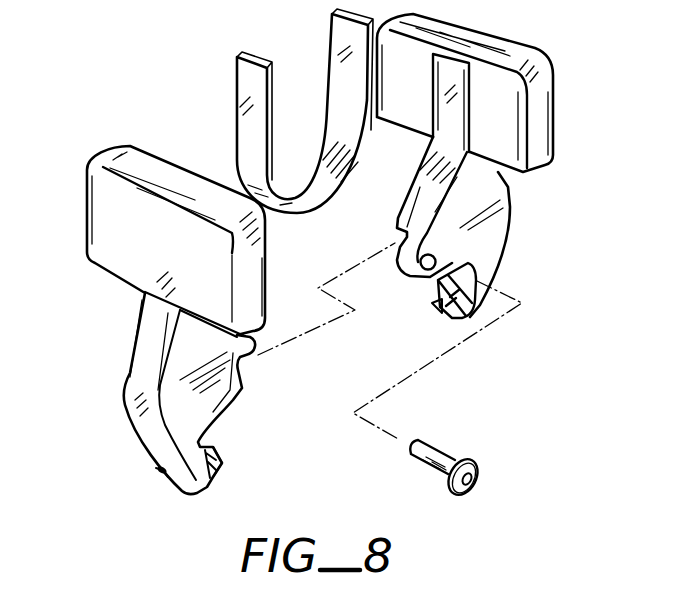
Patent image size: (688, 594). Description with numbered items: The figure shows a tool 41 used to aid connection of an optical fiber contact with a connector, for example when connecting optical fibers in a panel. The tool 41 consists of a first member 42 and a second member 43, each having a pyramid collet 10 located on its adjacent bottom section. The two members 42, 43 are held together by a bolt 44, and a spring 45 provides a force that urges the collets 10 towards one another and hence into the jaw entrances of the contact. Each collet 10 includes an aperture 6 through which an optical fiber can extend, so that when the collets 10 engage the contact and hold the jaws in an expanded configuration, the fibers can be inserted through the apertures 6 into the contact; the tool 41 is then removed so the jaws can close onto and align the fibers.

The tool 41 is at (188, 80).
The first member 42 is at (540, 133).
The second member 43 is at (123, 257).
The bolt 44 is at (480, 470).
The spring 45 is at (245, 152).
The aperture 6 is at (160, 473).
The pyramid collet 10 is at (222, 455).